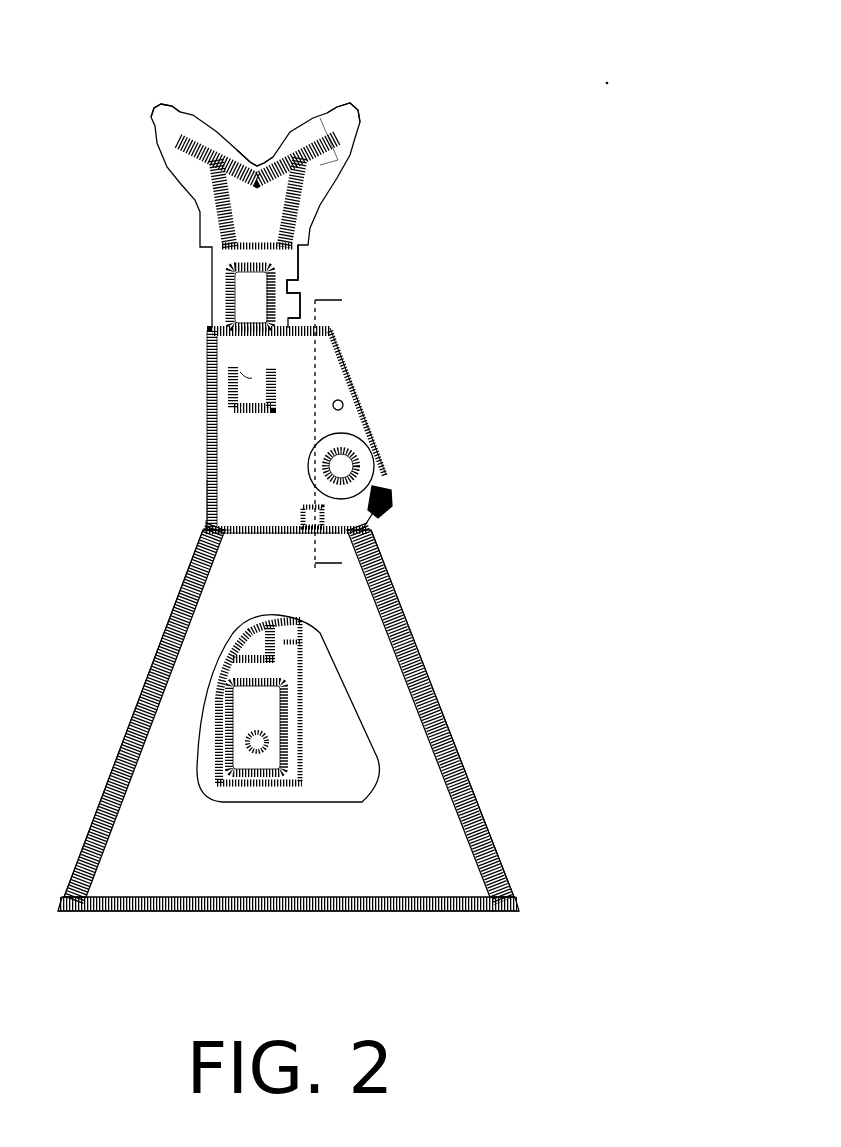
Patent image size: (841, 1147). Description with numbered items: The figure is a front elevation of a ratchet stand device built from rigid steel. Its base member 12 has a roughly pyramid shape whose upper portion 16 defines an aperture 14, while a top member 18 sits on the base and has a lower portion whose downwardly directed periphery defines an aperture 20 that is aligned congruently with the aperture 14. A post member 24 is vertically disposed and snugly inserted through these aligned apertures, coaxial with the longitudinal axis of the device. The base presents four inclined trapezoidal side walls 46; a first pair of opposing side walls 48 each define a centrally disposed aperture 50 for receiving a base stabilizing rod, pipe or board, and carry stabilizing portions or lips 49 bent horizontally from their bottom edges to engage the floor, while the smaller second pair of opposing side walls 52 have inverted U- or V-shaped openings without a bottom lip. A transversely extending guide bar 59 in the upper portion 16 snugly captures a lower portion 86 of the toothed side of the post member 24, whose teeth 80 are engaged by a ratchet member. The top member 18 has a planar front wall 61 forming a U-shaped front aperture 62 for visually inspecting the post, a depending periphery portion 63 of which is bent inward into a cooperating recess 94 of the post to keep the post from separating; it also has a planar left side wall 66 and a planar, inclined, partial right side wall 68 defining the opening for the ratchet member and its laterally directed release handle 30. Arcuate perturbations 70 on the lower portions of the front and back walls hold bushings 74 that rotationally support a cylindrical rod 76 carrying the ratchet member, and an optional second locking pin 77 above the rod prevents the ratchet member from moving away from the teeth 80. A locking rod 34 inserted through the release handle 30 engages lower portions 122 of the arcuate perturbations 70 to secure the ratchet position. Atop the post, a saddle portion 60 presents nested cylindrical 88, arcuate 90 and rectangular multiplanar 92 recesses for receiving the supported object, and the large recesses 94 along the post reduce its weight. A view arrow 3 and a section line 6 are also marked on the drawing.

The section view indicator 3 is at (212, 312).
The section line 6 is at (327, 433).
The base member 12 is at (364, 880).
The aperture 14 is at (273, 540).
The upper portion of the base member 16 is at (208, 550).
The top member 18 is at (205, 492).
The aperture 20 is at (267, 527).
The post member 24 is at (212, 262).
The release handle 30 is at (382, 520).
The locking rod 34 is at (393, 500).
The inclined trapezoidal side walls 46 is at (177, 600).
The first pair of opposing side walls 48 is at (497, 855).
The stabilizing portions 49 is at (440, 912).
The first pair of horizontally aligned apertures 50 is at (333, 803).
The second pair of opposing side walls 52 is at (100, 800).
The guide bar 59 is at (300, 503).
The saddle portion 60 is at (360, 112).
The planar front wall 61 is at (240, 450).
The U-shaped front aperture 62 is at (228, 390).
The depending periphery portion 63 is at (252, 378).
The planar left side wall 66 is at (206, 430).
The partial right side wall 68 is at (353, 385).
The arcuate perturbations 70 is at (376, 474).
The bushings 74 is at (376, 438).
The cylindrical rod 76 is at (358, 432).
The second locking pin 77 is at (342, 402).
The teeth 80 is at (300, 297).
The lower portion of the post member 86 is at (303, 737).
The cylindrical recess 88 is at (257, 150).
The arcuate recess 90 is at (213, 130).
The multiplanar recess 92 is at (162, 104).
The recesses 94 is at (312, 163).
The lower portions of the arcuate perturbations 122 is at (393, 560).